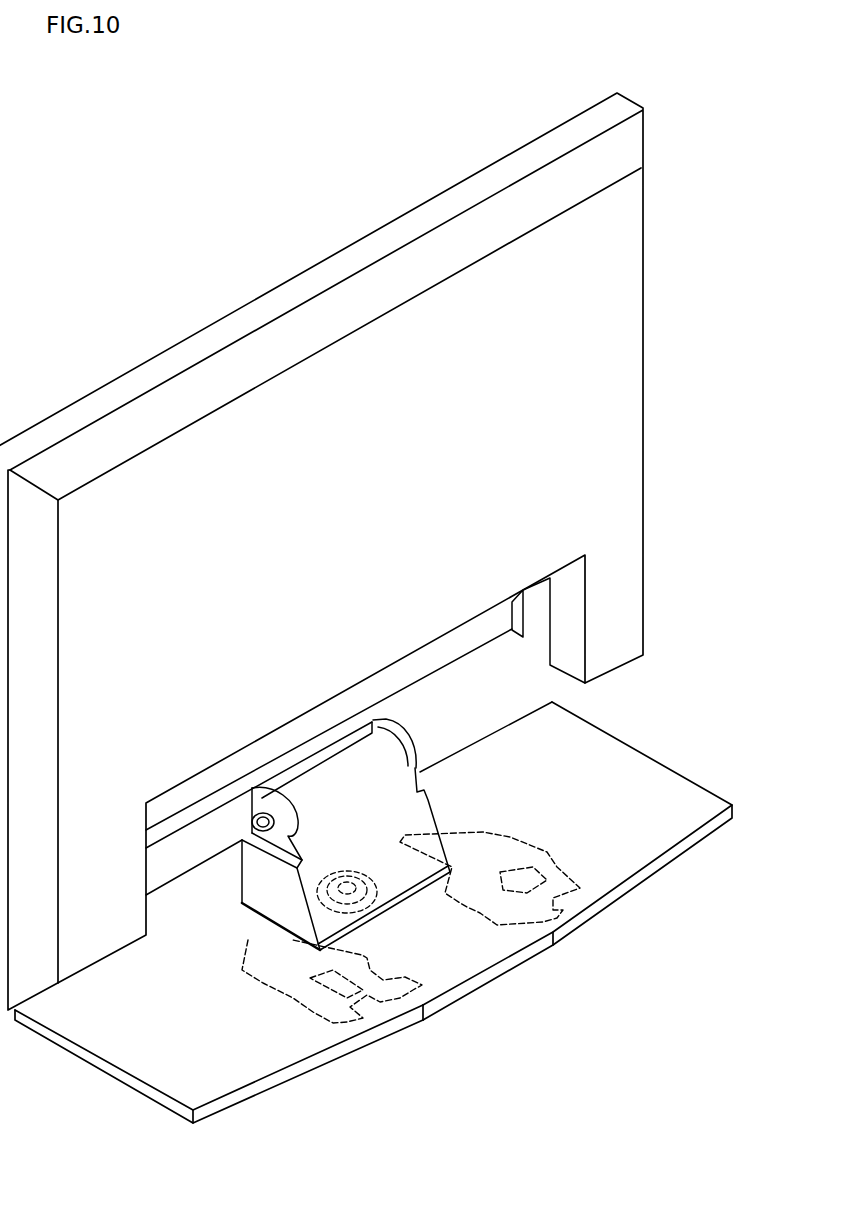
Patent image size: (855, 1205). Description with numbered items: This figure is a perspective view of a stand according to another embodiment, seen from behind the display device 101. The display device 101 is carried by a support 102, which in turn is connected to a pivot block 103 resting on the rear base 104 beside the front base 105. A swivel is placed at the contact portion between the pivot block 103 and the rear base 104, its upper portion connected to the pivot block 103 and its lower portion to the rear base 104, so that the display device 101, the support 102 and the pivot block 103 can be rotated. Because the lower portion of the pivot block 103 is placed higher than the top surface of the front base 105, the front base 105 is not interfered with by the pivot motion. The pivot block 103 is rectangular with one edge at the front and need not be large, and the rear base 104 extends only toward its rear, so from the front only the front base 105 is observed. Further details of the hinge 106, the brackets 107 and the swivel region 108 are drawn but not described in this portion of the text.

The display device 101 is at (612, 380).
The support 102 is at (520, 676).
The pivot block 103 is at (400, 880).
The rear base 104 is at (435, 983).
The front base 105 is at (167, 1065).
The hinge 106 is at (257, 822).
The fixing bracket 107 is at (350, 1023).
The rotation member 108 is at (347, 863).